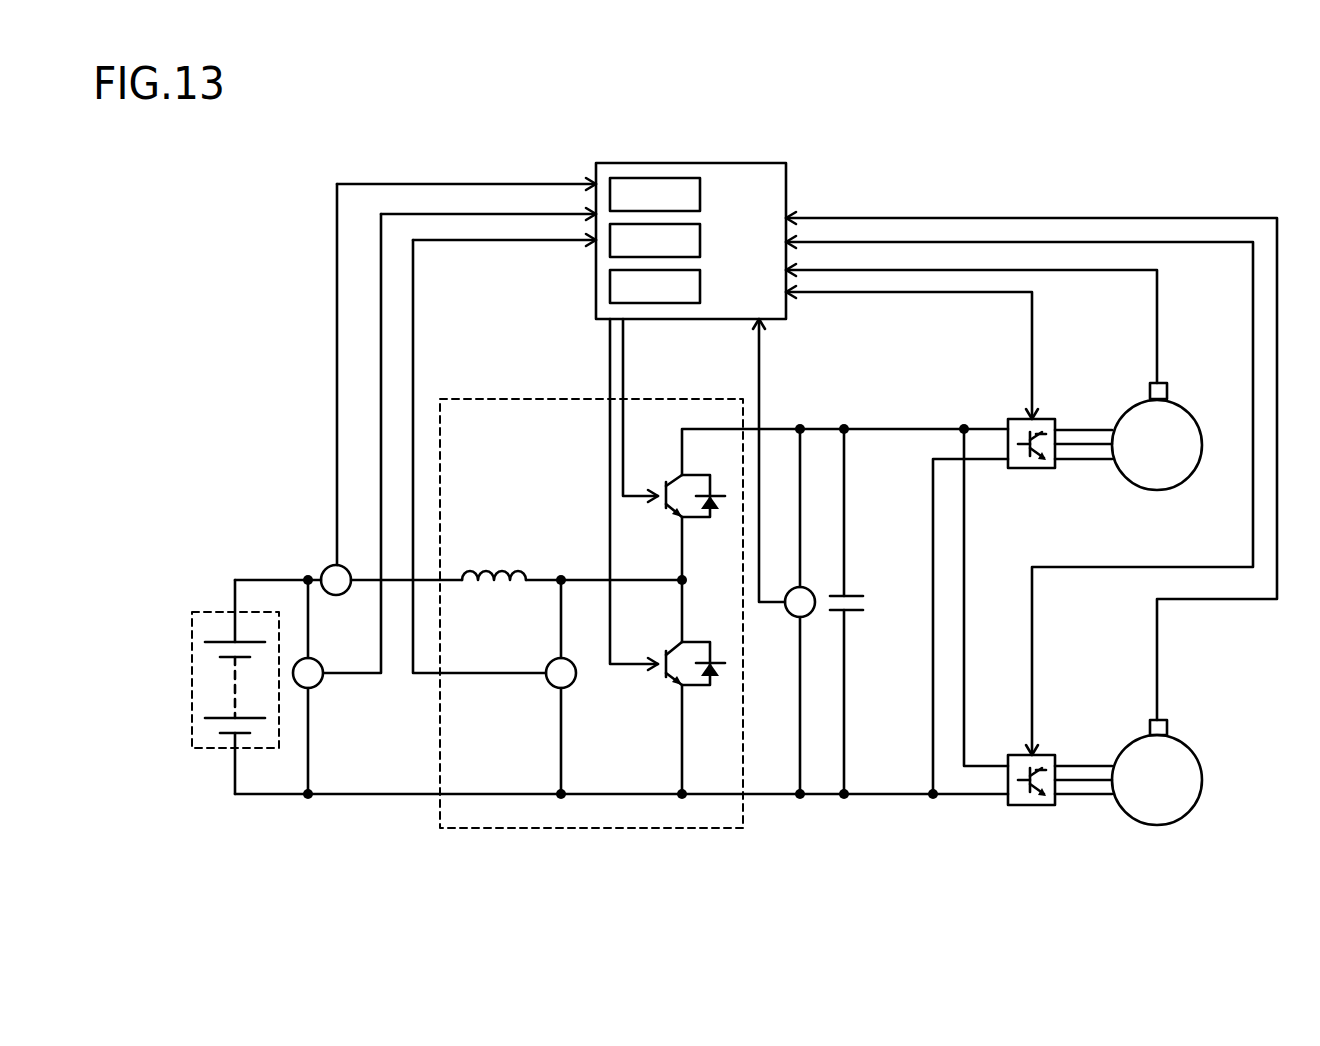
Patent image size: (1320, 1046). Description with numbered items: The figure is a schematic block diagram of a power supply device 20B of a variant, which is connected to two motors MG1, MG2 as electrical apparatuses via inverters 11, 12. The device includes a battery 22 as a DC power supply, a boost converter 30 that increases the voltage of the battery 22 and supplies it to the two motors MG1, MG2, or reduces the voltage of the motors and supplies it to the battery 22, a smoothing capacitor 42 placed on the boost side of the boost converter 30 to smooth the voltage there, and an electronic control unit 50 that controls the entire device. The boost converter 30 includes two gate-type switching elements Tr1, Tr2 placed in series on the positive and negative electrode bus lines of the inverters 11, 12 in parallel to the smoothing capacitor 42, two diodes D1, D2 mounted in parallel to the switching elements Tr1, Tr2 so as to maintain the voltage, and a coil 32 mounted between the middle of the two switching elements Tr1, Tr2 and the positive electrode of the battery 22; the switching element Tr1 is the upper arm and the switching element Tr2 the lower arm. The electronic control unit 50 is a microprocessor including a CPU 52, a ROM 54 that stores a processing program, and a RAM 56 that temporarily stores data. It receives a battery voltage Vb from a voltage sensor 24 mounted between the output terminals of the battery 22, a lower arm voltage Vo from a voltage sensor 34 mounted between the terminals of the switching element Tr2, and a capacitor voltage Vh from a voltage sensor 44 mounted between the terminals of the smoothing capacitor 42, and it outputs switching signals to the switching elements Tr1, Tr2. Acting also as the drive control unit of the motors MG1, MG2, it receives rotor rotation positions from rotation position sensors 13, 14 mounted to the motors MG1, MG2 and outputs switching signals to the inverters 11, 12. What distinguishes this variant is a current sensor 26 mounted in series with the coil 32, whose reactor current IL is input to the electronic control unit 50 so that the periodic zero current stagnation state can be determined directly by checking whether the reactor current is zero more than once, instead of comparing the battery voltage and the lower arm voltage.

The power supply device 20B is at (1111, 192).
The electronic control unit 50 is at (729, 241).
The CPU 52 is at (700, 197).
The ROM 54 is at (700, 243).
The RAM 56 is at (700, 289).
The battery 22 is at (192, 682).
The voltage sensor 24 is at (320, 684).
The current sensor 26 is at (326, 569).
The boost converter 30 is at (540, 399).
The coil 32 is at (470, 578).
The voltage sensor 34 is at (549, 684).
The switching element Tr1 is at (672, 487).
The switching element Tr2 is at (665, 680).
The diode D1 is at (718, 518).
The diode D2 is at (718, 688).
The smoothing capacitor 42 is at (852, 592).
The voltage sensor 44 is at (787, 613).
The inverter 11 is at (1050, 417).
The inverter 12 is at (1048, 753).
The rotation position sensor 13 is at (1148, 385).
The rotation position sensor 14 is at (1148, 722).
The motor MG1 is at (1182, 408).
The motor MG2 is at (1192, 746).